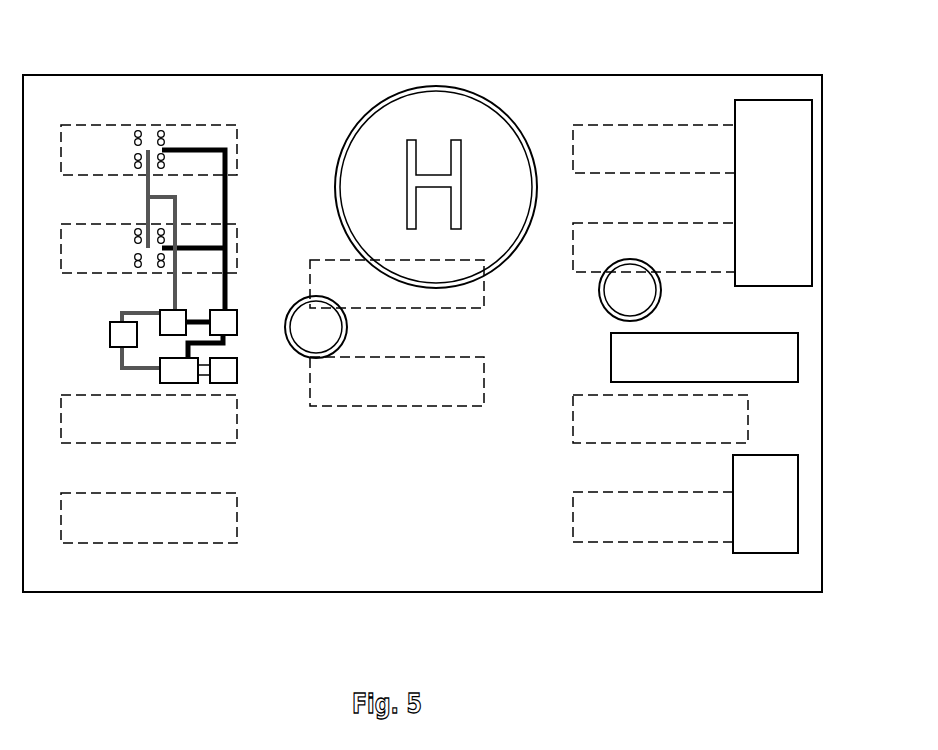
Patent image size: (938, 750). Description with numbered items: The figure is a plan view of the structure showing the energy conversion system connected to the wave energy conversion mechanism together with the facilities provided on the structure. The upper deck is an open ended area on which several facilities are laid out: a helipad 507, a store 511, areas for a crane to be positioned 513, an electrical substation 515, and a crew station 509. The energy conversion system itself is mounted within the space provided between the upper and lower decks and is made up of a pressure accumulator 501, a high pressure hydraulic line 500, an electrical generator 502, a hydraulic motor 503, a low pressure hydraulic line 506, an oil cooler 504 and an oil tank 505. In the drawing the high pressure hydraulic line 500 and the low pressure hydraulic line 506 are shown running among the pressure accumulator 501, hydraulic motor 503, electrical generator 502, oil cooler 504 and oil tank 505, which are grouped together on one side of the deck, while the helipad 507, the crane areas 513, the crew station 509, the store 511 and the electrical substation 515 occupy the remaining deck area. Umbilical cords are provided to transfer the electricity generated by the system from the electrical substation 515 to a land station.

The high pressure hydraulic line 500 is at (202, 150).
The pressure accumulator 501 is at (228, 310).
The electrical generator 502 is at (238, 386).
The hydraulic motor 503 is at (178, 386).
The oil cooler 504 is at (110, 337).
The oil tank 505 is at (174, 310).
The low pressure hydraulic line 506 is at (142, 213).
The helipad 507 is at (376, 138).
The crew station 509 is at (610, 358).
The store 511 is at (813, 250).
The areas for crane to be positioned 513 is at (349, 333).
The electrical substation 515 is at (732, 518).